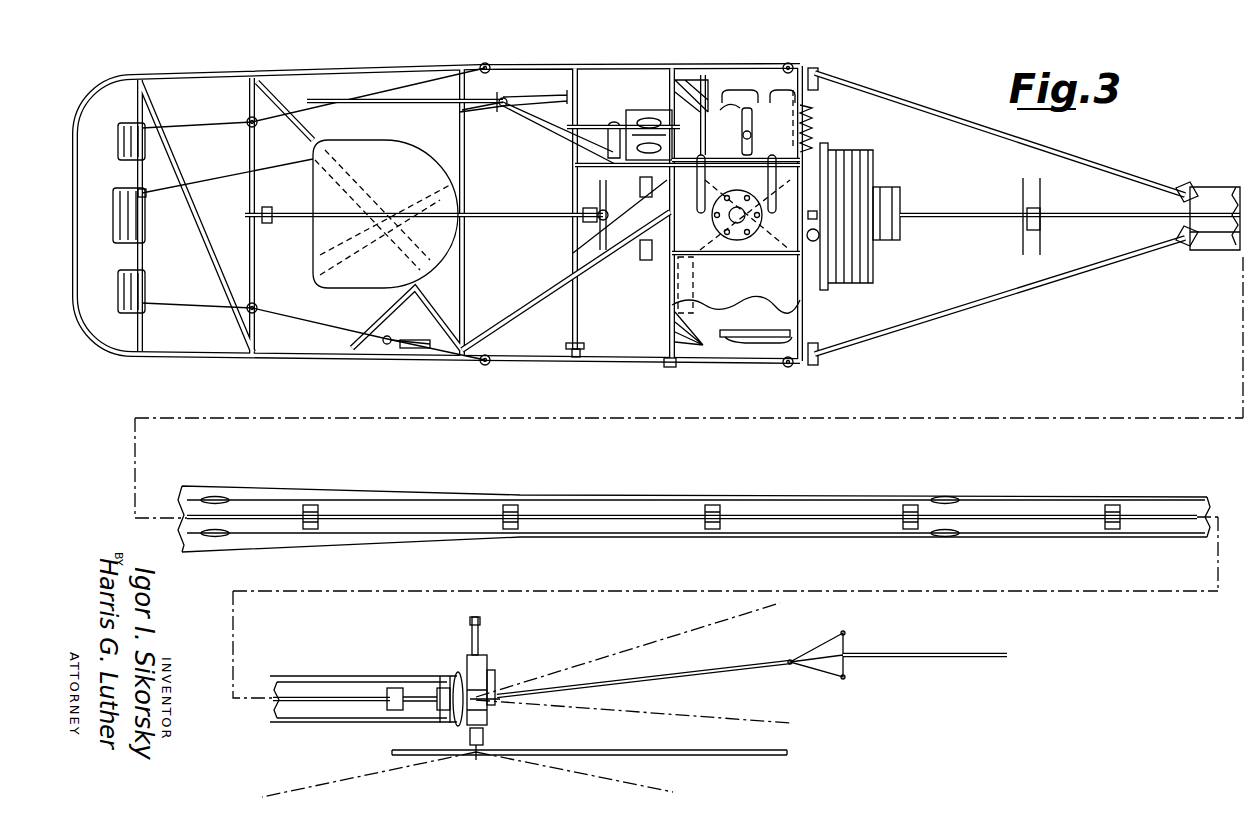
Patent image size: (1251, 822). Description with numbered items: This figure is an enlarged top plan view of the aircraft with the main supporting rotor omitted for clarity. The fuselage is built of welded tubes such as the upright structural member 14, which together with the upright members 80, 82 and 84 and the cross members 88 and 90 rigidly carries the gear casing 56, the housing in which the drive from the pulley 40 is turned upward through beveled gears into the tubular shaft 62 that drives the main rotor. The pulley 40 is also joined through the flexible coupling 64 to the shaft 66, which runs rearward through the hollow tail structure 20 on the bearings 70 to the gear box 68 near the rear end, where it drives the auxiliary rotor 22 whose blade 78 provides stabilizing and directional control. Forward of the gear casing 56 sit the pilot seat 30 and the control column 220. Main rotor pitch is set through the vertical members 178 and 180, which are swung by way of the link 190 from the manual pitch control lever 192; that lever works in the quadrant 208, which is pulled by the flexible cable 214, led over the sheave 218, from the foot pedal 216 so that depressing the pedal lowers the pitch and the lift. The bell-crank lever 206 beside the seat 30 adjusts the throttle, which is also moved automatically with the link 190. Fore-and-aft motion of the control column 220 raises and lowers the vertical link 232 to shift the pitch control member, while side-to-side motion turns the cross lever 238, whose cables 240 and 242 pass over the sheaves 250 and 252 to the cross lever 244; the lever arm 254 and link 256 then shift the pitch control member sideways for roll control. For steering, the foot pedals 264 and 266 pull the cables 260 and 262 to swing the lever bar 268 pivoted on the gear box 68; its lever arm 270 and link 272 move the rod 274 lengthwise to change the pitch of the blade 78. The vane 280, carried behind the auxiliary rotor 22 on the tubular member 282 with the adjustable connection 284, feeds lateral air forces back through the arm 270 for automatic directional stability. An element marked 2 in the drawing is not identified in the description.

The pilot seat 2 is at (747, 170).
The upright structural member 14 is at (806, 333).
The tail structure 20 is at (1219, 186).
The auxiliary rotor 22 is at (417, 740).
The pilot seat 30 is at (438, 278).
The pulley 40 is at (872, 182).
The gear casing 56 is at (648, 252).
The tubular shaft 62 is at (737, 205).
The flexible coupling 64 is at (900, 232).
The shaft 66 is at (934, 211).
The gear box 68 is at (495, 672).
The bearings 70 is at (520, 506).
The secondary rotor blade 78 is at (686, 755).
The upright structural member 80 is at (666, 368).
The upright structural member 82 is at (690, 75).
The upright structural member 84 is at (812, 70).
The cross member 88 is at (672, 298).
The cross member 90 is at (802, 304).
The vertical member 178 is at (703, 222).
The vertical member 180 is at (770, 222).
The link 190 is at (612, 130).
The manual pitch control lever 192 is at (310, 100).
The bell-crank lever 206 is at (388, 344).
The quadrant 208 is at (506, 96).
The flexible cable 214 is at (232, 173).
The foot pedal 216 is at (125, 210).
The sheave 218 is at (470, 113).
The control column 220 is at (274, 205).
The vertical link 232 is at (578, 228).
The cross lever 238 is at (600, 232).
The cable 240 is at (590, 265).
The cable 242 is at (598, 150).
The cross lever 244 is at (748, 108).
The sheave 250 is at (615, 160).
The sheave 252 is at (640, 110).
The lever arm 254 is at (728, 100).
The link 256 is at (815, 128).
The cable 260 is at (232, 126).
The cable 262 is at (207, 304).
The foot pedal 264 is at (124, 122).
The foot pedal 266 is at (111, 352).
The lever bar 268 is at (463, 672).
The lever arm 270 is at (485, 705).
The link 272 is at (473, 653).
The rod 274 is at (481, 622).
The vane 280 is at (960, 652).
The tubular member 282 is at (710, 670).
The adjustable connection 284 is at (827, 645).